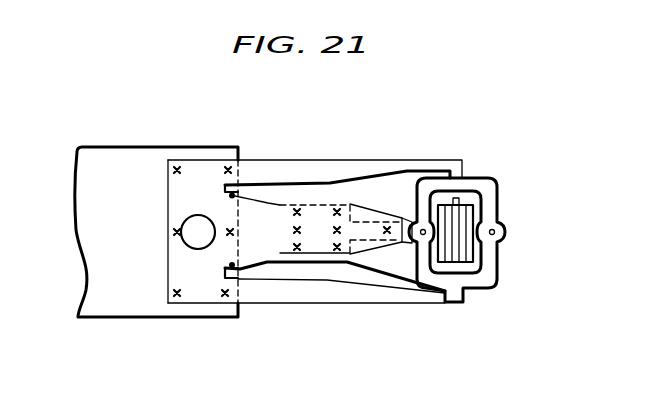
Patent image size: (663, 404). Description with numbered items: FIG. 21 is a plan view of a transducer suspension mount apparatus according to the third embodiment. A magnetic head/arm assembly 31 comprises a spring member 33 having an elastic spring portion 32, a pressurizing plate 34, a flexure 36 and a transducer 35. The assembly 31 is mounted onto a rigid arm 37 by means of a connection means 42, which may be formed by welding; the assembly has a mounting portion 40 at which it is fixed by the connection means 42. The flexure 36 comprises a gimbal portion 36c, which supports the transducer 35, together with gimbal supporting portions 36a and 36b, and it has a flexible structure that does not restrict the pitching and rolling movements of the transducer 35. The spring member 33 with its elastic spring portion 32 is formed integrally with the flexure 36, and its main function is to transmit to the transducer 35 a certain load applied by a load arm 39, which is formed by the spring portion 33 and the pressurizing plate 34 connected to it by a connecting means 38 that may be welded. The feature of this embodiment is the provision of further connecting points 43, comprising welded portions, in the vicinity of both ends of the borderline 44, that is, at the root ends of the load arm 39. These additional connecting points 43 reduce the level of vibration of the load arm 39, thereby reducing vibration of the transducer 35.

The magnetic head/arm assembly 31 is at (366, 152).
The elastic spring portion 32 is at (264, 267).
The spring member 33 is at (364, 264).
The pressurizing plate 34 is at (413, 249).
The transducer 35 is at (462, 258).
The flexure 36 is at (474, 170).
The gimbal supporting portion 36a is at (309, 168).
The gimbal supporting portion 36b is at (318, 292).
The gimbal portion 36c is at (488, 198).
The rigid arm 37 is at (100, 162).
The connecting means 38 is at (295, 228).
The load arm 39 is at (305, 275).
The mounting portion 40 is at (195, 175).
The connection means 42 is at (175, 231).
The connecting points 43 is at (239, 227).
The borderline 44 is at (241, 188).